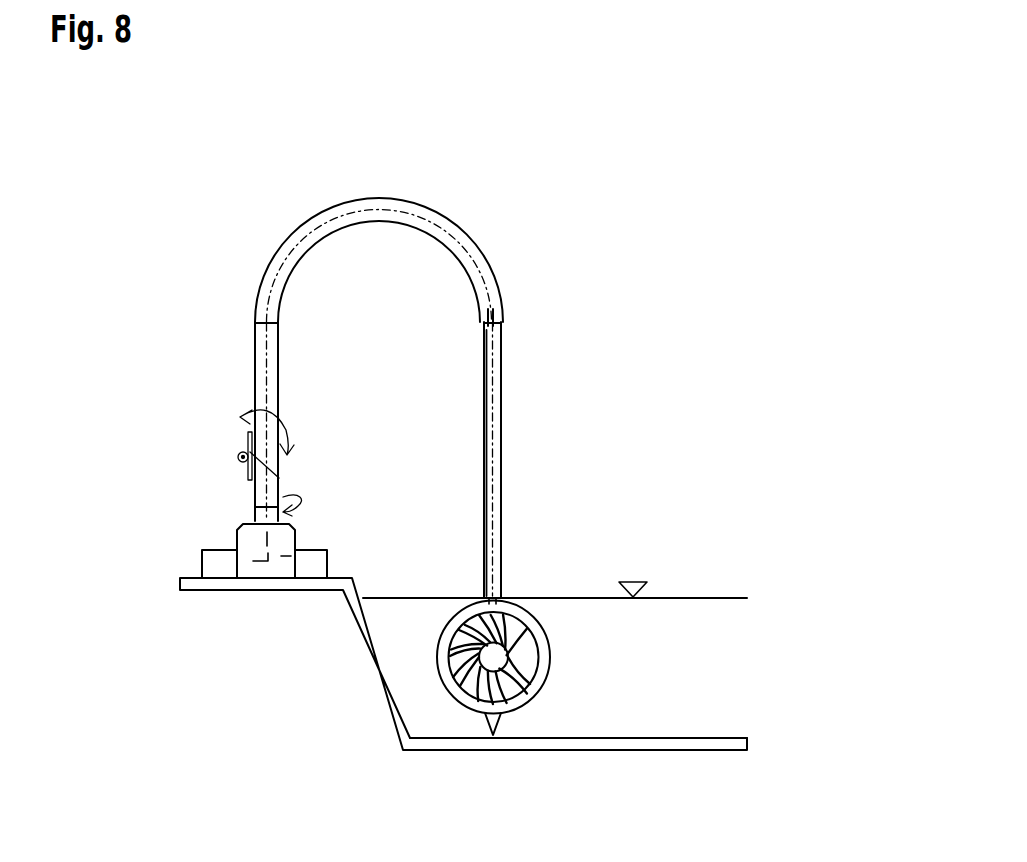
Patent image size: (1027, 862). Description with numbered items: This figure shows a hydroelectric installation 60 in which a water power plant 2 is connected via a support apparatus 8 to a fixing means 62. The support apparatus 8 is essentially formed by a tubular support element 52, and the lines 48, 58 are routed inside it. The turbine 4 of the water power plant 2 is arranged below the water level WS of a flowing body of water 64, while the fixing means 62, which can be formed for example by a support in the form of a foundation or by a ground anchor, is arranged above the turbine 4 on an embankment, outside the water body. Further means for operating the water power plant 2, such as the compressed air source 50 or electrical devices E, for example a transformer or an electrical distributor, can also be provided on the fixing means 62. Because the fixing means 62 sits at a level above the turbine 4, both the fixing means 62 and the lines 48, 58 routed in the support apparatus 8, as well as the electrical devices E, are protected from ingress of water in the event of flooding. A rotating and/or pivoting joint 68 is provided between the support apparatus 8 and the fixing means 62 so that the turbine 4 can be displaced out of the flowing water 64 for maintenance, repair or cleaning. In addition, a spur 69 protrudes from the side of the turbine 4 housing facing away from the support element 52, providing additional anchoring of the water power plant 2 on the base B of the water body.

The water power plant 2 is at (750, 344).
The hydroelectric installation 60 is at (588, 208).
The support apparatus 8 is at (488, 263).
The line 48 is at (490, 367).
The line 58 is at (485, 398).
The tubular support element 52 is at (500, 415).
The rotating and/or pivoting joint 68 is at (230, 449).
The compressed air source 50 is at (307, 567).
The electrical devices E is at (212, 560).
The fixing means 62 is at (276, 590).
The base of the water body B is at (668, 722).
The flowing body of water 64 is at (723, 587).
The water level WS is at (637, 571).
The turbine 4 is at (546, 607).
The spur 69 is at (500, 718).